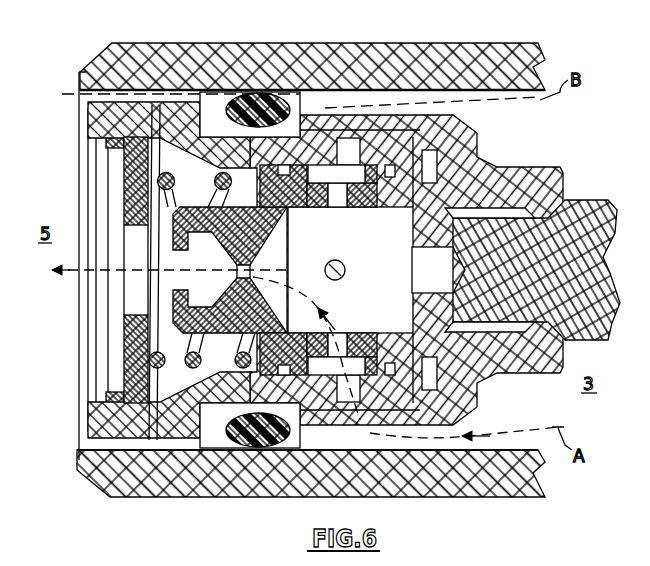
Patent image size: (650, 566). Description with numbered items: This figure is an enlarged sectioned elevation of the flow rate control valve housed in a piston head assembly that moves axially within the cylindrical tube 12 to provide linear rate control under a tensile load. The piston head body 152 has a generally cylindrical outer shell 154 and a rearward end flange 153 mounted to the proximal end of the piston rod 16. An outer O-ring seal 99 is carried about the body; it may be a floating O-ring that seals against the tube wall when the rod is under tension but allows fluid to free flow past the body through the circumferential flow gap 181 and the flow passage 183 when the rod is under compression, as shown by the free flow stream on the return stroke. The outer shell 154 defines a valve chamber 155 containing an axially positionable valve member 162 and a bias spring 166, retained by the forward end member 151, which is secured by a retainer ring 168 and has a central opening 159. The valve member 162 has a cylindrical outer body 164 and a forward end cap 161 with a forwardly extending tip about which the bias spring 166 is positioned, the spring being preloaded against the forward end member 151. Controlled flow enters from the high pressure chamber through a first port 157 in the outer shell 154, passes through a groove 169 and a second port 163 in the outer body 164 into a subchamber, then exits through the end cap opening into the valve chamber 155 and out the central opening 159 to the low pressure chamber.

The cylindrical tube 12 is at (469, 43).
The piston rod 16 is at (583, 200).
The outer O-ring seal 99 is at (272, 130).
The forward end member 151 is at (108, 182).
The piston head body 152 is at (133, 86).
The rearward end flange 153 is at (547, 167).
The outer shell 154 is at (327, 133).
The valve chamber 155 is at (166, 170).
The first port 157 is at (433, 147).
The central opening 159 is at (127, 278).
The forward end cap 161 is at (175, 330).
The valve member 162 is at (417, 212).
The second port 163 is at (335, 197).
The outer body 164 is at (417, 328).
The bias spring 166 is at (133, 283).
The retainer ring 168 is at (108, 145).
The groove 169 is at (345, 268).
The circumferential flow gap 181 is at (215, 120).
The flow passage 183 is at (372, 140).